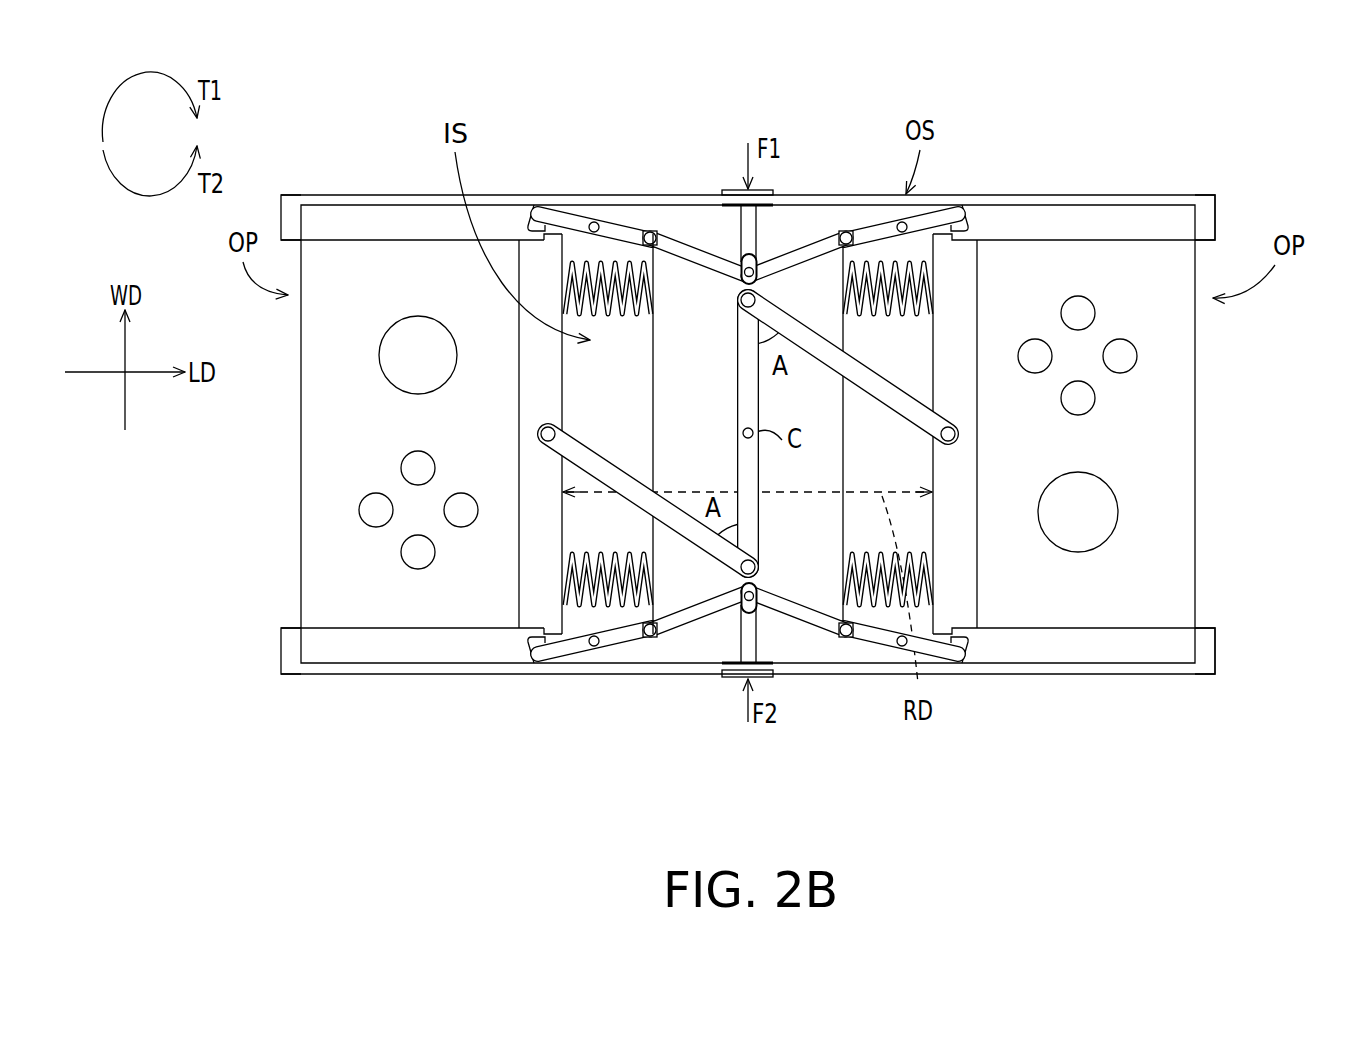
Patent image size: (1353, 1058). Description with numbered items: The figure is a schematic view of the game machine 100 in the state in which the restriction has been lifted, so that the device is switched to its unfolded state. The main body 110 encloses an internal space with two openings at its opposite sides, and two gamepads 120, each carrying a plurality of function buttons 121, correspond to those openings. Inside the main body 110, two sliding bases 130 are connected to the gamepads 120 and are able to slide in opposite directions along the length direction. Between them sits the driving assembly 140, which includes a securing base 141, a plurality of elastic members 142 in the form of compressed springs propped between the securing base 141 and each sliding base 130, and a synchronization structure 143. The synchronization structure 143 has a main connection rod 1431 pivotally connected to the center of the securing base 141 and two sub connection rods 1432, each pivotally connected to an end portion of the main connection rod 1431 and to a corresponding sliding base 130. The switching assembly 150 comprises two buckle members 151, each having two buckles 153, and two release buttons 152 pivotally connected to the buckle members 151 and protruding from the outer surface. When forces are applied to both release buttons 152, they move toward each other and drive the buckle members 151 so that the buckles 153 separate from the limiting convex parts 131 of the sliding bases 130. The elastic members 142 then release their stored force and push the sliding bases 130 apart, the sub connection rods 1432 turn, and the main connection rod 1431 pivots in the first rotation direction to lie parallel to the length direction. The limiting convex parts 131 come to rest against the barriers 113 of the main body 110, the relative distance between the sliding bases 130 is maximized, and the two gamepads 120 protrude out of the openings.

The game machine 100 is at (1335, 775).
The main body 110 is at (1113, 198).
The barriers 113 is at (290, 222).
The gamepads 120 is at (1167, 447).
The function buttons 121 is at (1122, 356).
The sliding bases 130 is at (968, 352).
The limiting convex parts 131 is at (948, 232).
The driving assembly 140 is at (843, 822).
The securing base 141 is at (693, 585).
The elastic members 142 is at (610, 603).
The synchronization structure 143 is at (880, 778).
The main connection rod 1431 is at (753, 525).
The sub connection rods 1432 is at (733, 557).
The switching assembly 150 is at (870, 80).
The buckle members 151 is at (747, 171).
The release buttons 152 is at (688, 258).
The buckles 153 is at (872, 226).